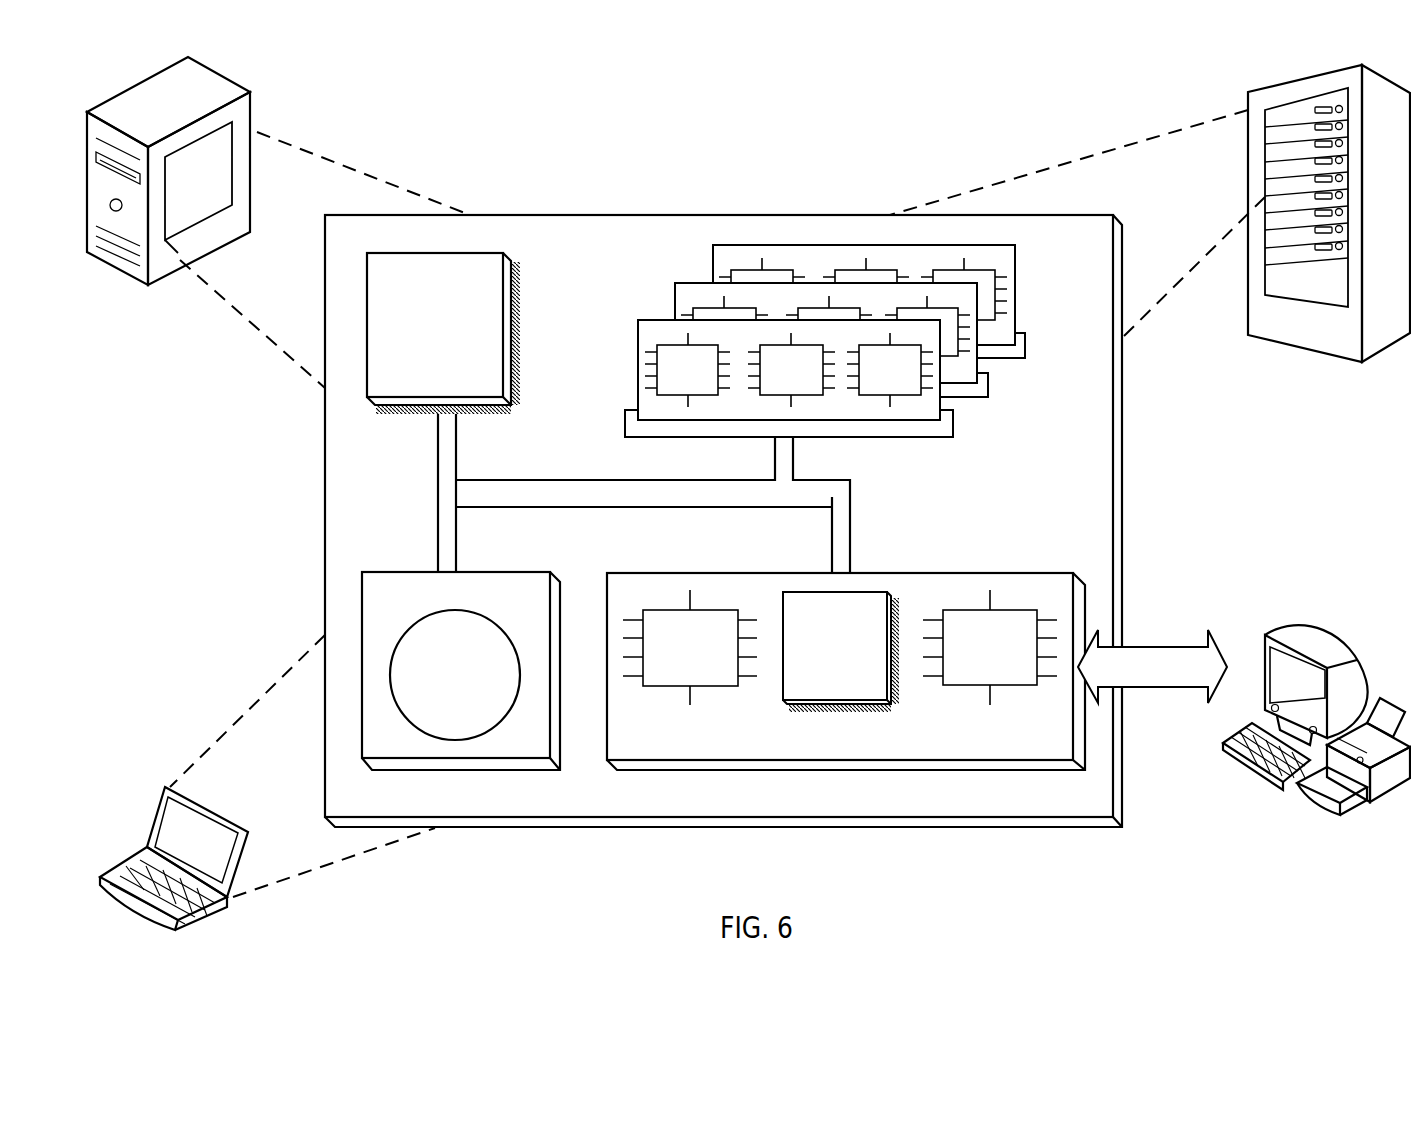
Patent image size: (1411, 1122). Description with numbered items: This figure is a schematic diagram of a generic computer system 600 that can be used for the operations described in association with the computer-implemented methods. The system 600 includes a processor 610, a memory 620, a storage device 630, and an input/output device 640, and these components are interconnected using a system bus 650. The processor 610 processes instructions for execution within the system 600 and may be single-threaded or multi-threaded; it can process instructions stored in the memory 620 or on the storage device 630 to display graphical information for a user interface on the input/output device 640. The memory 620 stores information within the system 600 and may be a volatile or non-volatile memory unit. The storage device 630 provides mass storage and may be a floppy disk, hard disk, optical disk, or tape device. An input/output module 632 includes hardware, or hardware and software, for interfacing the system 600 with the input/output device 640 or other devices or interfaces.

The computer system 600 is at (528, 79).
The processor 610 is at (483, 387).
The memory 620 is at (1024, 399).
The storage device 630 is at (540, 751).
The input/output module 632 is at (1007, 572).
The input/output device 640 is at (1265, 635).
The system bus 650 is at (633, 497).